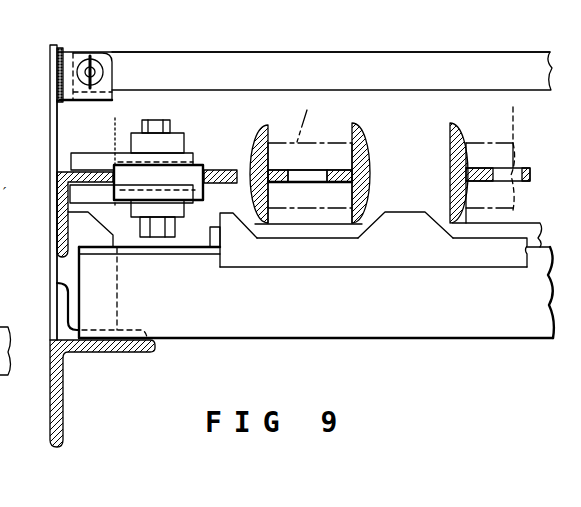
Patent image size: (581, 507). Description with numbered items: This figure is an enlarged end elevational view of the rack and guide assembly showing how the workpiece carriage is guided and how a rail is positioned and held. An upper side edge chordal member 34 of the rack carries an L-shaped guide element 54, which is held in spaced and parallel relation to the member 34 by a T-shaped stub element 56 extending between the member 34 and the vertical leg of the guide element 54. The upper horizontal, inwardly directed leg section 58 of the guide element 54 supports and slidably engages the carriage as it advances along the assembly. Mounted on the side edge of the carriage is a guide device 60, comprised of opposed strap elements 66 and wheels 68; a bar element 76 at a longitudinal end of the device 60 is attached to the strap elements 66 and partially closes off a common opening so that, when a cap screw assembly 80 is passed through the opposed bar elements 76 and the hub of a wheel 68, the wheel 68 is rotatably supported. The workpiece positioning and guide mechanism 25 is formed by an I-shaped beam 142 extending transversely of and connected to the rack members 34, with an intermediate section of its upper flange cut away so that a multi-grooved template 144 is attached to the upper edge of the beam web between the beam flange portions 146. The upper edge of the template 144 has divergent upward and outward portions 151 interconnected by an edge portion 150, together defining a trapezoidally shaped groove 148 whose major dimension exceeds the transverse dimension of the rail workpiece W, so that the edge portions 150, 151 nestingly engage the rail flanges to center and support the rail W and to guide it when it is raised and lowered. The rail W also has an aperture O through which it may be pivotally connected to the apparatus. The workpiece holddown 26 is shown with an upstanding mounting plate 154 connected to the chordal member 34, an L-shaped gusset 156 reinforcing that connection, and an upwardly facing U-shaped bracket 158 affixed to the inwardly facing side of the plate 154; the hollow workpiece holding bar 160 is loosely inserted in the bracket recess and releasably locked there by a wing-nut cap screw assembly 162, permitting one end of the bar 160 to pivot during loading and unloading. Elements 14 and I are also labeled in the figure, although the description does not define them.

The roller assembly 14 is at (236, 168).
The workpiece positioning and guide mechanism 25 is at (220, 322).
The workpiece holddown 26 is at (276, 40).
The upper side edge chordal member 34 is at (63, 395).
The L-shaped guide element 54 is at (57, 166).
The T-shaped stub element 56 is at (82, 228).
The upper horizontal leg section 58 is at (83, 160).
The guide device 60 is at (118, 214).
The strap element 66 is at (97, 162).
The wheel 68 is at (207, 168).
The bar element 76 is at (173, 141).
The cap screw assembly 80 is at (159, 121).
The I-shaped beam 142 is at (342, 315).
The multi-grooved template 144 is at (477, 262).
The beam flange portion 146 is at (180, 252).
The trapezoidally shaped groove 148 is at (338, 216).
The edge portion 150 is at (283, 240).
The divergent upward and outward portion 151 is at (238, 222).
The upstanding mounting plate 154 is at (50, 55).
The L-shaped gusset 156 is at (118, 332).
The U-shaped bracket 158 is at (72, 56).
The hollow workpiece holding bar 160 is at (305, 49).
The wing-nut cap screw assembly 162 is at (89, 54).
The inner position I is at (316, 120).
The aperture O is at (319, 168).
The rail workpiece W is at (390, 120).